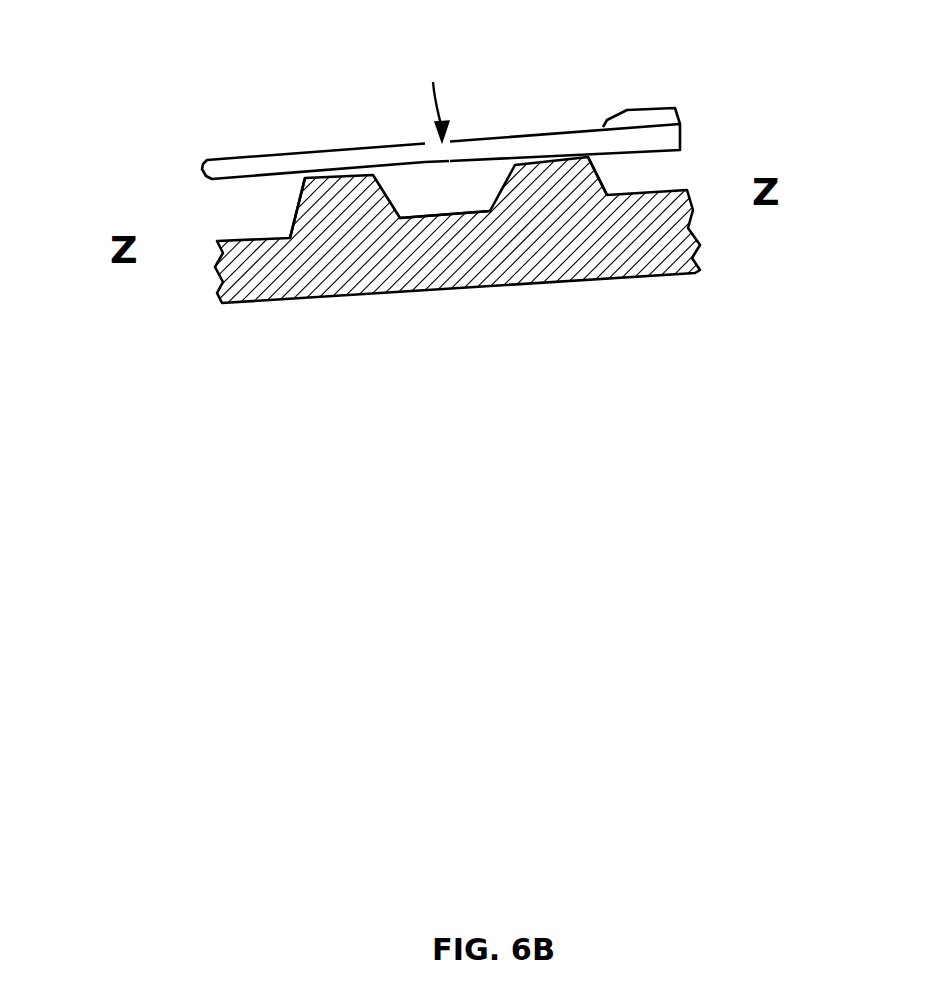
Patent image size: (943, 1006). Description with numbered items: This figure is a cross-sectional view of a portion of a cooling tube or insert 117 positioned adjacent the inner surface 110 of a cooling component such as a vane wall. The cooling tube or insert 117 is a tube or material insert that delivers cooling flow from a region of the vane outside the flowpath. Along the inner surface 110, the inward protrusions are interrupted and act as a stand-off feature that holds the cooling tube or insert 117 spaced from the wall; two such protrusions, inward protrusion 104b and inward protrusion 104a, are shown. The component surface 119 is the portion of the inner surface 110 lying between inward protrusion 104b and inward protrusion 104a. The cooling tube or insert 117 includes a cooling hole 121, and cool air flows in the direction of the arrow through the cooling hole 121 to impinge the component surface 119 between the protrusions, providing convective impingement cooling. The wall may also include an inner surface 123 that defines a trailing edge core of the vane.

The inward protrusion 104a is at (605, 187).
The inward protrusion 104b is at (300, 200).
The inner surface 110 is at (240, 239).
The cooling tube or insert 117 is at (307, 162).
The component surface 119 is at (445, 199).
The cooling hole 121 is at (451, 100).
The inner surface 123 is at (445, 160).